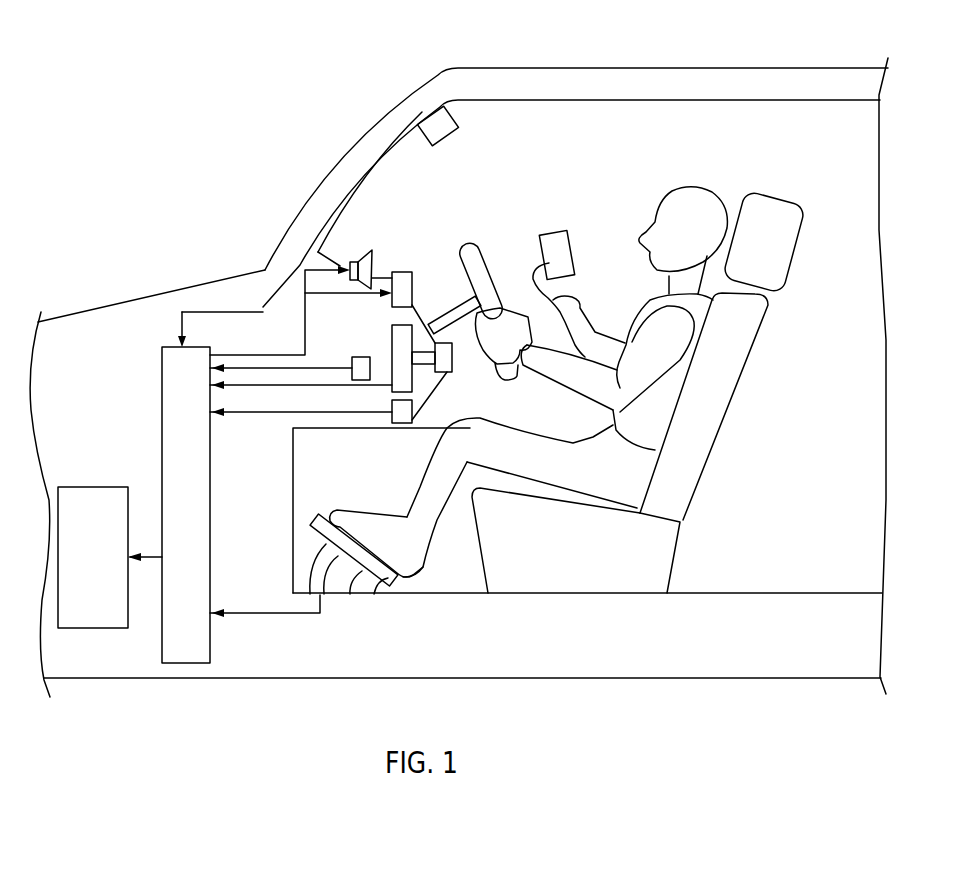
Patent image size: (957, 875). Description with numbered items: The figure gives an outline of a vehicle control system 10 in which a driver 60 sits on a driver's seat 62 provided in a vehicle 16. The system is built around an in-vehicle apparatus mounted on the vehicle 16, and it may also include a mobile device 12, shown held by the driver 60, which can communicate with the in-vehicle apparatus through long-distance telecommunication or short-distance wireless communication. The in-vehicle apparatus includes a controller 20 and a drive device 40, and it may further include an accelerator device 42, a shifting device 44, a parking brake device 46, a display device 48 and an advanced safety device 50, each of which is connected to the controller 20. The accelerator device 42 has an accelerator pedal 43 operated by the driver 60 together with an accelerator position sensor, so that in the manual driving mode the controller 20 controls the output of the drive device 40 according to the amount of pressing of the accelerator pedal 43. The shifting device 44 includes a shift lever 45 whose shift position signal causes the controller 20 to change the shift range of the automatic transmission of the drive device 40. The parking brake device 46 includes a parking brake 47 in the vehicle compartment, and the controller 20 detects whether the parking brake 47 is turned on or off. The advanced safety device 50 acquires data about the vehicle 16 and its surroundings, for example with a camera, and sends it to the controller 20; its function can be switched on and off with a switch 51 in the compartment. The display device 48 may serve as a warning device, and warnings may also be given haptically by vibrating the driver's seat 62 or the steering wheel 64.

The vehicle control system 10 is at (283, 145).
The mobile device 12 is at (572, 231).
The vehicle 16 is at (668, 84).
The controller 20 is at (162, 400).
The drive device 40 is at (84, 487).
The accelerator device 42 is at (372, 588).
The accelerator pedal 43 is at (350, 597).
The shifting device 44 is at (477, 358).
The shift lever 45 is at (452, 372).
The parking brake device 46 is at (384, 456).
The parking brake 47 is at (405, 424).
The display device 48 is at (406, 271).
The advanced safety device 50 is at (455, 140).
The switch 51 is at (356, 358).
The driver 60 is at (697, 186).
The driver's seat 62 is at (727, 437).
The steering wheel 64 is at (478, 242).